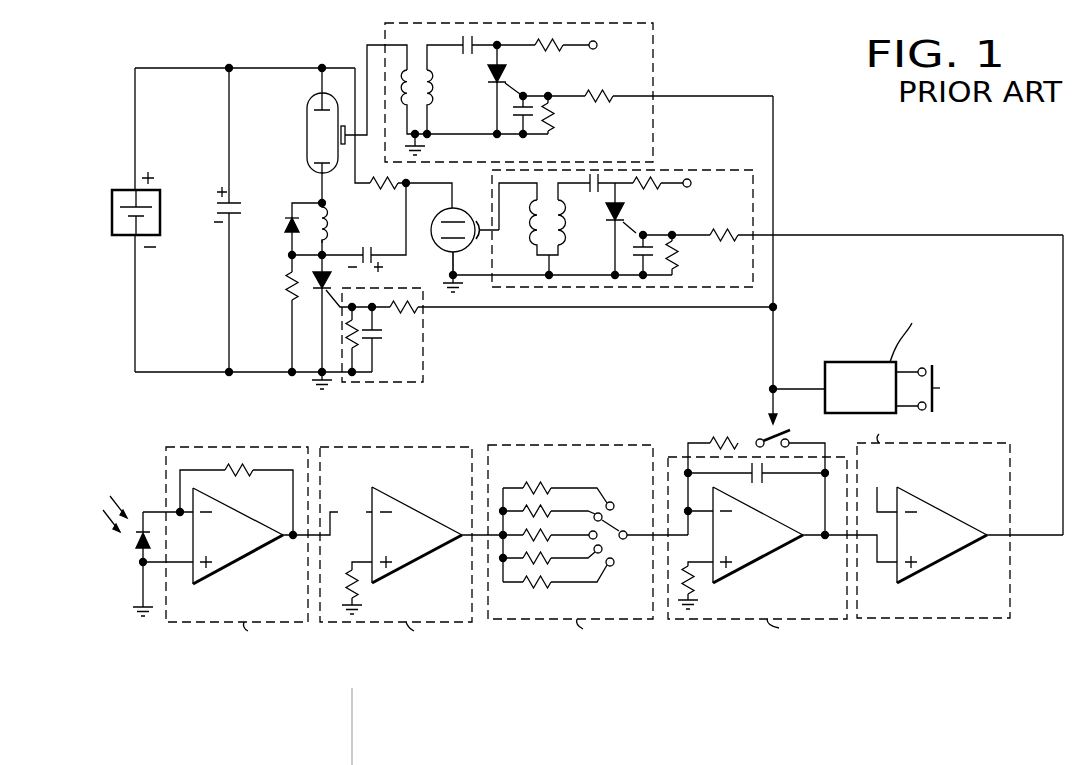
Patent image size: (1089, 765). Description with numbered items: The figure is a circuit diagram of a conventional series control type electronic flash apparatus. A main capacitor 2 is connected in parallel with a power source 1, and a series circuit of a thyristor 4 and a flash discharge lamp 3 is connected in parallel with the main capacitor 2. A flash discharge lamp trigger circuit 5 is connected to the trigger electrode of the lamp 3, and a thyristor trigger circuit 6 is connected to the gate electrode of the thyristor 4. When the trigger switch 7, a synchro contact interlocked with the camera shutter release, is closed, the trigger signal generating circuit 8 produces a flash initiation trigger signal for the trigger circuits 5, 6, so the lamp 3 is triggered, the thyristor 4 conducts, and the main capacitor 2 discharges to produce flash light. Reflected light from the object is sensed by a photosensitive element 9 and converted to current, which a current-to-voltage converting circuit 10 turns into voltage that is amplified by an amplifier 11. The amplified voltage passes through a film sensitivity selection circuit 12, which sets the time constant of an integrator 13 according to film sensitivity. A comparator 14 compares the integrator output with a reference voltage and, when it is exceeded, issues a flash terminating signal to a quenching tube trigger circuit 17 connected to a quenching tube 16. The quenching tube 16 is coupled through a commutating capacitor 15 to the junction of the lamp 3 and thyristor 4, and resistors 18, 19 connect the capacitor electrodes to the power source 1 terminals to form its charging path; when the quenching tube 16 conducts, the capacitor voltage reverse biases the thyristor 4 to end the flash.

The power source 1 is at (112, 203).
The main capacitor 2 is at (216, 207).
The flash discharge lamp 3 is at (307, 120).
The thyristor 4 is at (319, 291).
The flash discharge lamp trigger circuit 5 is at (655, 45).
The thyristor trigger circuit 6 is at (423, 330).
The trigger switch 7 is at (936, 376).
The trigger signal generating circuit 8 is at (869, 362).
The photosensitive element 9 is at (136, 557).
The current-to-voltage converting circuit 10 is at (205, 622).
The amplifier 11 is at (385, 622).
The film sensitivity selection circuit 12 is at (538, 619).
The integrator 13 is at (740, 619).
The comparator 14 is at (950, 619).
The commutating capacitor 15 is at (367, 246).
The quenching tube 16 is at (443, 212).
The quenching tube trigger circuit 17 is at (713, 170).
The resistor 18 is at (384, 180).
The resistor 19 is at (288, 288).